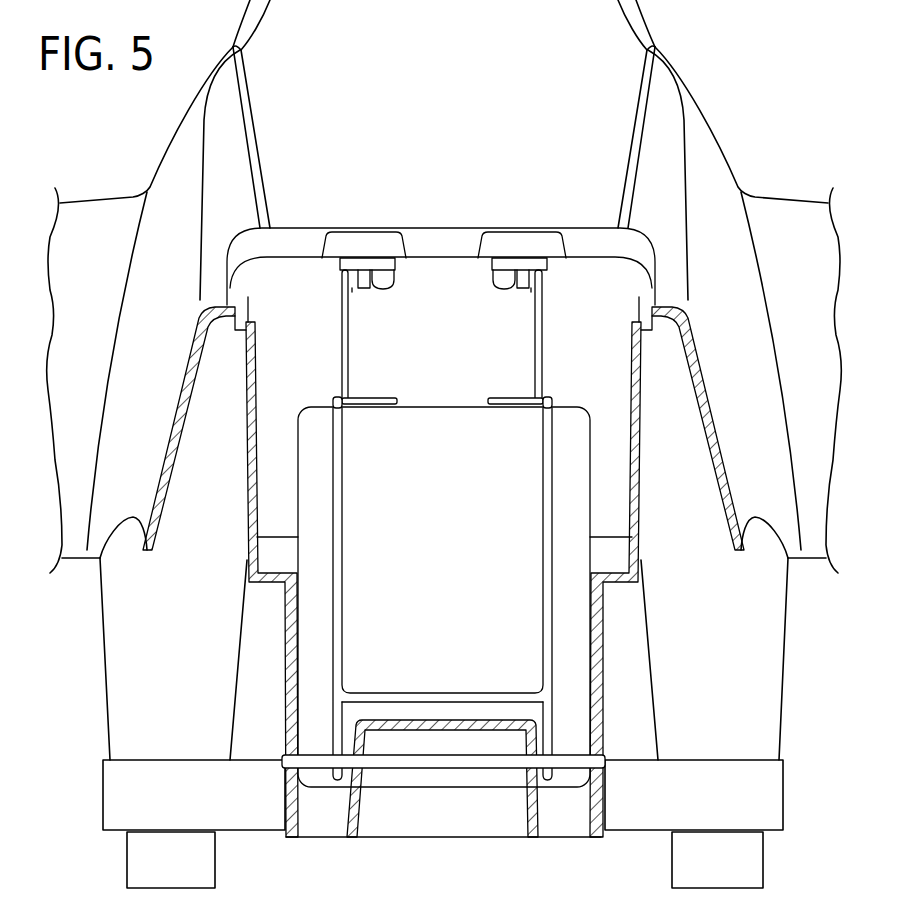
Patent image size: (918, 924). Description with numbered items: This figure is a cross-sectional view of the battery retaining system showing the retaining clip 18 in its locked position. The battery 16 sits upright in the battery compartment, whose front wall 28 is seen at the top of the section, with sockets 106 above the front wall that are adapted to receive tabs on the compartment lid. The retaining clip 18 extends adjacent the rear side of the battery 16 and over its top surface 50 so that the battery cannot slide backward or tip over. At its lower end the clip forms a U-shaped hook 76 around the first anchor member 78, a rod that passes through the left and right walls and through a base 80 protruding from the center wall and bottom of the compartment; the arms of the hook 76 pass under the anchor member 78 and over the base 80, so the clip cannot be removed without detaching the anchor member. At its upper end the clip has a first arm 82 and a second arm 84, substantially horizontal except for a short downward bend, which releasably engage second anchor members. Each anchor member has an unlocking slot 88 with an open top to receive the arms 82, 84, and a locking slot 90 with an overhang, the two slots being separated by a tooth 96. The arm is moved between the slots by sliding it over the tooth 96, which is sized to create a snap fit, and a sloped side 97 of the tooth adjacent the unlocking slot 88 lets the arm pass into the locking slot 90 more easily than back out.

The battery 16 is at (447, 567).
The retaining clip 18 is at (334, 400).
The front wall 28 is at (305, 366).
The top surface 50 is at (440, 405).
The hook 76 is at (547, 748).
The first anchor member 78 is at (428, 763).
The base 80 is at (365, 797).
The first arm 82 is at (340, 296).
The second arm 84 is at (543, 293).
The unlocking slot 88 is at (390, 290).
The locking slot 90 is at (353, 290).
The tooth 96 is at (372, 277).
The sloped side 97 is at (513, 278).
The sockets 106 is at (378, 240).